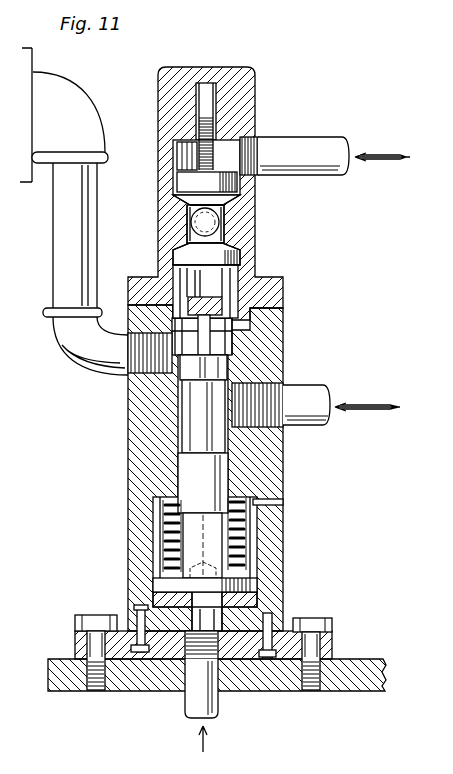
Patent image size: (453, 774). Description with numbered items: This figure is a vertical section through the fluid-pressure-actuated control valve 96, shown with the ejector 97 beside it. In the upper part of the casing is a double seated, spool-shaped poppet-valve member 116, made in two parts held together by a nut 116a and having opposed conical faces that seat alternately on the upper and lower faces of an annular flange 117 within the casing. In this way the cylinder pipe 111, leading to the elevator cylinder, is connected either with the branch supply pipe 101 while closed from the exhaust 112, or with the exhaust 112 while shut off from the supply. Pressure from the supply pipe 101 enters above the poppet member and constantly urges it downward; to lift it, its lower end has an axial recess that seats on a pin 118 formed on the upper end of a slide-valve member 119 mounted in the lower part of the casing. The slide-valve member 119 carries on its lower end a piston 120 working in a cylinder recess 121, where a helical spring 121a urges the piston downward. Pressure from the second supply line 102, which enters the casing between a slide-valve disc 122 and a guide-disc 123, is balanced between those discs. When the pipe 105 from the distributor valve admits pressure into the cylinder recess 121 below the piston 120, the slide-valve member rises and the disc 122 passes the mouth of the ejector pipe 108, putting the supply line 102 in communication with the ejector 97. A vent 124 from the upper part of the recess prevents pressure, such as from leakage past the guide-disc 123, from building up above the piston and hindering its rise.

The control valve 96 is at (284, 332).
The ejector 97 is at (33, 62).
The branch supply pipe 101 is at (303, 145).
The second incoming fluid-pressure supply line 102 is at (308, 390).
The pipe from distributor valve 105 is at (202, 698).
The ejector pipe 108 is at (78, 235).
The cylinder pipe 111 is at (222, 207).
The exhaust 112 is at (173, 250).
The poppet-valve member 116 is at (207, 224).
The nut 116a is at (203, 175).
The annular flange 117 is at (228, 219).
The pin 118 is at (212, 336).
The slide-valve member 119 is at (200, 425).
The piston 120 is at (168, 583).
The cylinder recess 121 is at (258, 531).
The helical spring 121a is at (244, 546).
The slide-valve disc 122 is at (193, 370).
The guide-disc 123 is at (187, 480).
The vent 124 is at (283, 501).